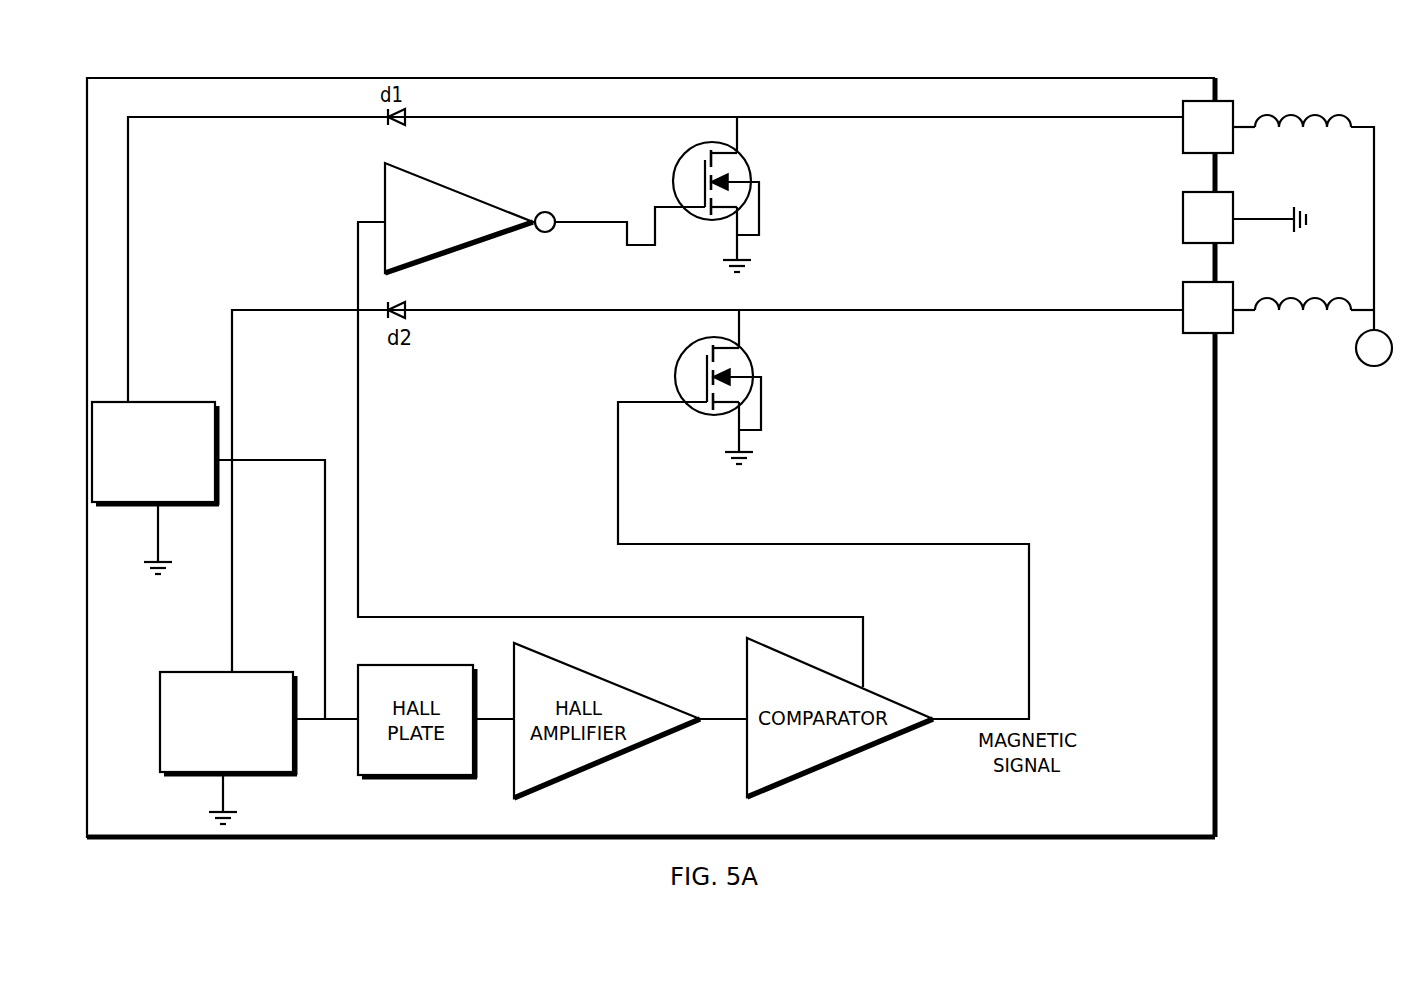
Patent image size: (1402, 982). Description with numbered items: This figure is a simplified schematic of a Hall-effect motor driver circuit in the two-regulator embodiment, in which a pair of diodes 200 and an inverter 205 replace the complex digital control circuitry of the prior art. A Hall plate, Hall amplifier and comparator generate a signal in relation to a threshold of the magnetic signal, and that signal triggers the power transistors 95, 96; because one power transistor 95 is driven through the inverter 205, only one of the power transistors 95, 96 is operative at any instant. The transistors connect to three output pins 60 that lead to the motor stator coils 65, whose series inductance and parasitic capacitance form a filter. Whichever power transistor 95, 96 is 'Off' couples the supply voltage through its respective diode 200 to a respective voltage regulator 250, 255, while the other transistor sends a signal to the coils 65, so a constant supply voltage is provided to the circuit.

The diodes 200 is at (408, 113).
The inverter 205 is at (476, 195).
The power transistor 95 is at (751, 168).
The power transistor 96 is at (757, 369).
The output pins 60 is at (1227, 101).
The motor stator coils 65 is at (1342, 112).
The voltage regulator 250 is at (163, 402).
The voltage regulator 255 is at (185, 672).